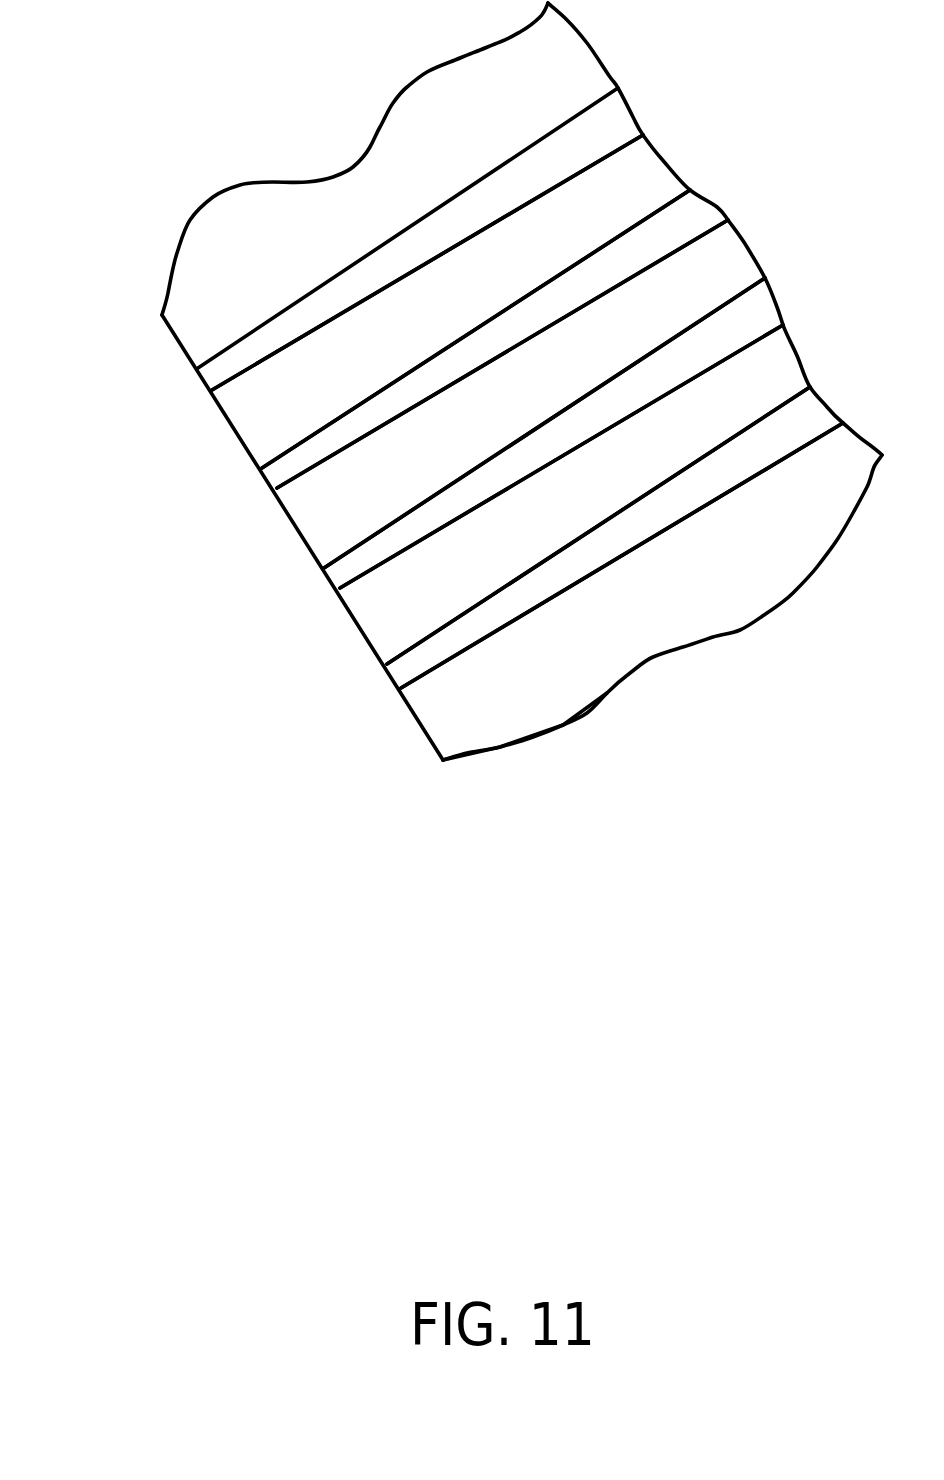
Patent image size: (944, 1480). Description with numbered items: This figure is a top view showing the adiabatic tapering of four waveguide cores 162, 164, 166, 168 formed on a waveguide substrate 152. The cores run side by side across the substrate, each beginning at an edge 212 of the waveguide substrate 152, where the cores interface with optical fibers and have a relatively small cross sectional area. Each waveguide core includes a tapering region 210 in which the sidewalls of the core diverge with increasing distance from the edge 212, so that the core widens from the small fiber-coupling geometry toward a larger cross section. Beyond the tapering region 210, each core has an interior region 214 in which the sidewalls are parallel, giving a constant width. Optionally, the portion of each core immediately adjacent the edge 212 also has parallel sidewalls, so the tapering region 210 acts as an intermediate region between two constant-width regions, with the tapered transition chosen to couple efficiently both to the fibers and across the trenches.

The waveguide substrate 152 is at (360, 168).
The edge of the waveguide substrate 212 is at (173, 338).
The tapering region 210 is at (340, 274).
The interior region 214 is at (535, 145).
The waveguide core 168 is at (242, 386).
The waveguide core 166 is at (306, 484).
The waveguide core 164 is at (370, 584).
The waveguide core 162 is at (433, 682).